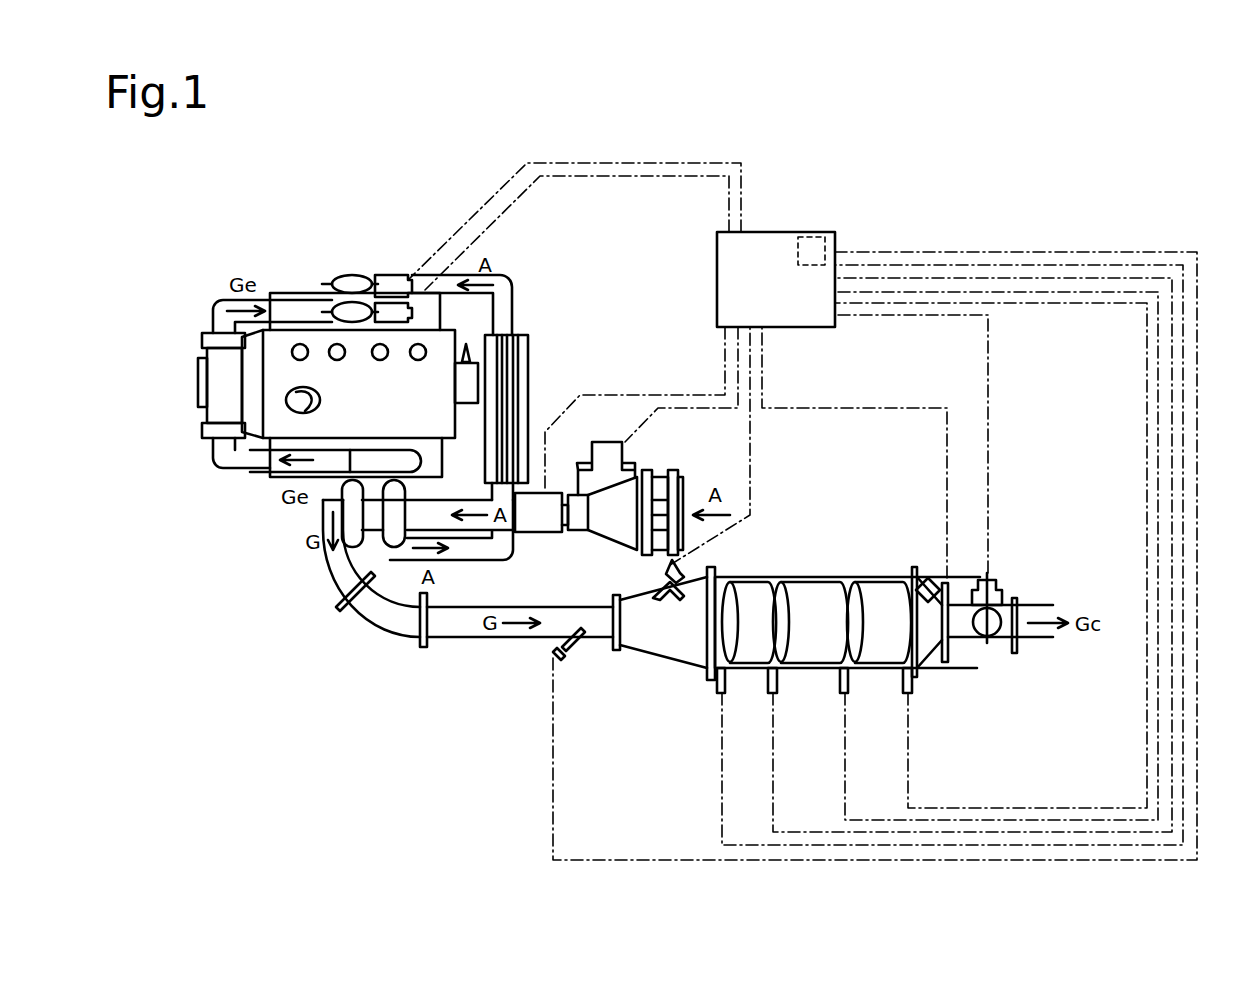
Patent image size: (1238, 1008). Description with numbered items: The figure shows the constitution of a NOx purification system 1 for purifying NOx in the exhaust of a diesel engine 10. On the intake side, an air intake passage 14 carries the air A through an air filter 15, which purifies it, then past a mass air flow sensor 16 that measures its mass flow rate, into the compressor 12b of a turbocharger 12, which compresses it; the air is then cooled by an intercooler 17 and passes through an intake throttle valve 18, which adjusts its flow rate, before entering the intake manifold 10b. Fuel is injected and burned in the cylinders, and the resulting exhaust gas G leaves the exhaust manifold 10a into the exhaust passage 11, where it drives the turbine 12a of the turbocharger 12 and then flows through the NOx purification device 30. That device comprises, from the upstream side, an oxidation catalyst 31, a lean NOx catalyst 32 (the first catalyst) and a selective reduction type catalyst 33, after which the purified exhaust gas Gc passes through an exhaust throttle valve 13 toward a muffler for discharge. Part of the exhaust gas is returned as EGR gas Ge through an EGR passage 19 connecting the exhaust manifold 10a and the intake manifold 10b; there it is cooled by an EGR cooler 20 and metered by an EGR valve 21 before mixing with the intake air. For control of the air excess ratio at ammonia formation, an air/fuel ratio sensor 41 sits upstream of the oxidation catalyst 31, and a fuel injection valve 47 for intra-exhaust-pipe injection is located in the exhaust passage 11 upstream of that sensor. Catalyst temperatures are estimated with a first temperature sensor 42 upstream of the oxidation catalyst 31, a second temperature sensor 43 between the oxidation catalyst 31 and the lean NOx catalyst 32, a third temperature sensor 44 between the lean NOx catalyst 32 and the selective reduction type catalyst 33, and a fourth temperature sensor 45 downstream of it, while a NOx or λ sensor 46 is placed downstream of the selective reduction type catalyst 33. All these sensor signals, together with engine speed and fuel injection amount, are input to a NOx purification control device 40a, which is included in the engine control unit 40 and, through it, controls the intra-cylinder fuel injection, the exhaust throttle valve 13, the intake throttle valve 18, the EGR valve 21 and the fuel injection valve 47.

The NOx purification system 1 is at (935, 211).
The diesel engine 10 is at (360, 416).
The exhaust manifold 10a is at (268, 478).
The intake manifold 10b is at (275, 293).
The exhaust passage 11 is at (480, 640).
The turbocharger 12 is at (348, 598).
The turbine 12a is at (398, 532).
The compressor 12b is at (340, 509).
The exhaust throttle valve 13 is at (994, 588).
The air intake passage 14 is at (502, 294).
The air filter 15 is at (622, 528).
The mass air flow sensor 16 is at (540, 533).
The intercooler 17 is at (515, 370).
The intake throttle valve 18 is at (392, 276).
The EGR passage 19 is at (220, 308).
The EGR cooler 20 is at (215, 405).
The EGR valve 21 is at (390, 304).
The NOx purification device 30 is at (840, 576).
The oxidation catalyst 31 is at (746, 590).
The lean NOx catalyst 32 is at (796, 595).
The selective reduction type catalyst 33 is at (874, 595).
The engine control unit 40 is at (772, 233).
The NOx purification control device 40a is at (814, 240).
The air/fuel ratio sensor 41 is at (670, 602).
The first temperature sensor 42 is at (726, 694).
The second temperature sensor 43 is at (776, 694).
The third temperature sensor 44 is at (846, 694).
The fourth temperature sensor 45 is at (909, 694).
The NOx or λ sensor 46 is at (936, 580).
The fuel injection valve 47 is at (563, 660).